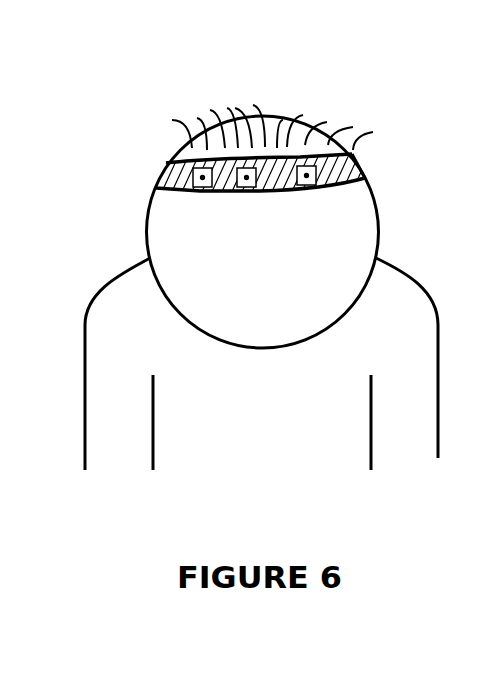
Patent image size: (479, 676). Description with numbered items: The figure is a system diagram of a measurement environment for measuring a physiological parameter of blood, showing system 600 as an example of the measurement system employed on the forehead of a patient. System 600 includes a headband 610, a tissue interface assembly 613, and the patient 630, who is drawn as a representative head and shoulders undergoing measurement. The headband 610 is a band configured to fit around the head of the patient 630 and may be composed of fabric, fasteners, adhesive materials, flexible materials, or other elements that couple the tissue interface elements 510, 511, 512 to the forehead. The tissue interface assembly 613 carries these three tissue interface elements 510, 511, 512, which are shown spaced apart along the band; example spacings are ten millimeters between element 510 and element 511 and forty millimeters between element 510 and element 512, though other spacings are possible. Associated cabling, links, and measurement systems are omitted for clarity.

The system 600 is at (104, 79).
The headband 610 is at (158, 166).
The tissue interface assembly 613 is at (365, 168).
The patient 630 is at (148, 213).
The tissue interface element 510 is at (212, 195).
The tissue interface element 511 is at (248, 195).
The tissue interface element 512 is at (308, 193).